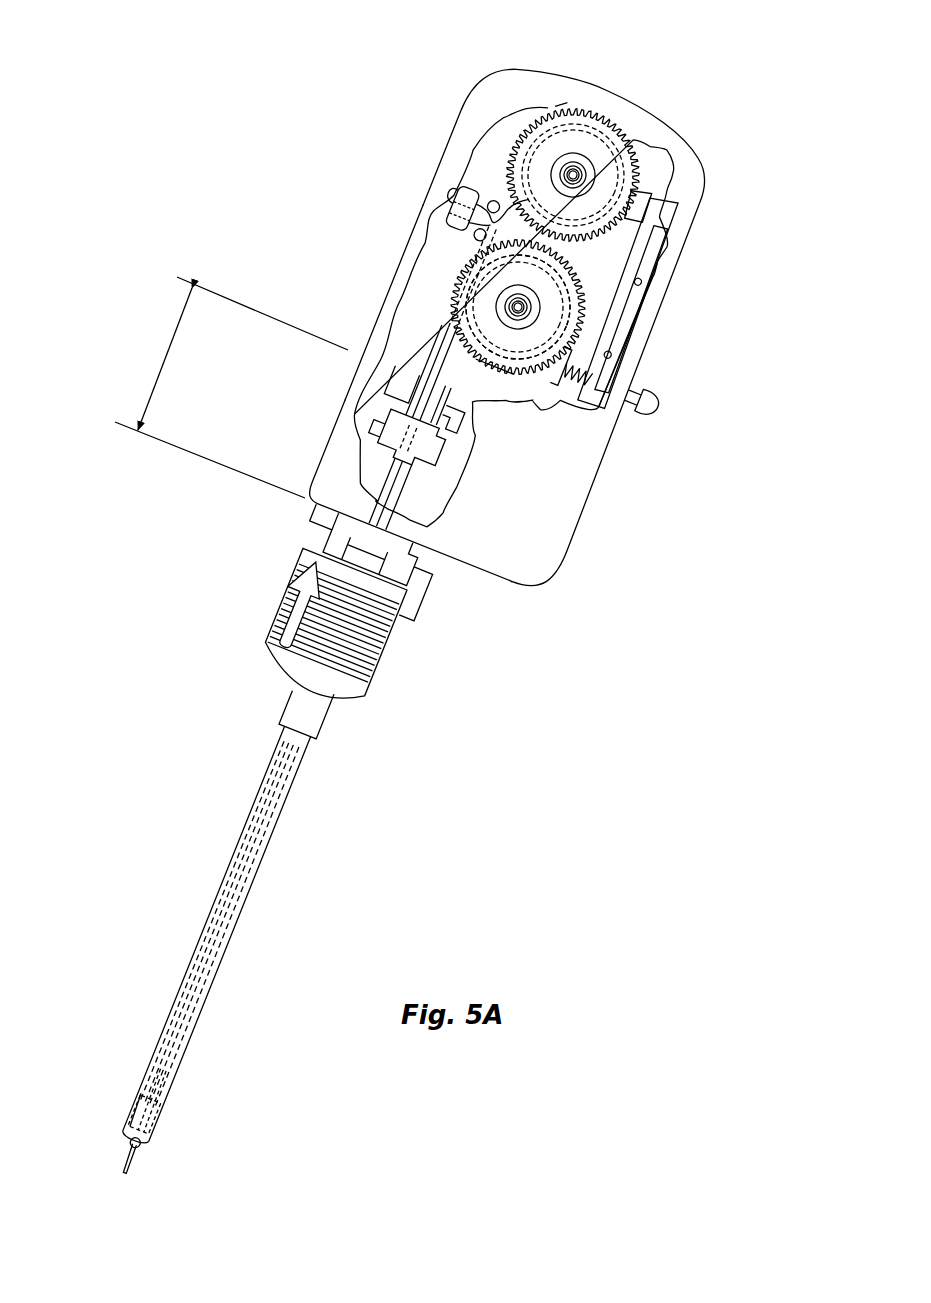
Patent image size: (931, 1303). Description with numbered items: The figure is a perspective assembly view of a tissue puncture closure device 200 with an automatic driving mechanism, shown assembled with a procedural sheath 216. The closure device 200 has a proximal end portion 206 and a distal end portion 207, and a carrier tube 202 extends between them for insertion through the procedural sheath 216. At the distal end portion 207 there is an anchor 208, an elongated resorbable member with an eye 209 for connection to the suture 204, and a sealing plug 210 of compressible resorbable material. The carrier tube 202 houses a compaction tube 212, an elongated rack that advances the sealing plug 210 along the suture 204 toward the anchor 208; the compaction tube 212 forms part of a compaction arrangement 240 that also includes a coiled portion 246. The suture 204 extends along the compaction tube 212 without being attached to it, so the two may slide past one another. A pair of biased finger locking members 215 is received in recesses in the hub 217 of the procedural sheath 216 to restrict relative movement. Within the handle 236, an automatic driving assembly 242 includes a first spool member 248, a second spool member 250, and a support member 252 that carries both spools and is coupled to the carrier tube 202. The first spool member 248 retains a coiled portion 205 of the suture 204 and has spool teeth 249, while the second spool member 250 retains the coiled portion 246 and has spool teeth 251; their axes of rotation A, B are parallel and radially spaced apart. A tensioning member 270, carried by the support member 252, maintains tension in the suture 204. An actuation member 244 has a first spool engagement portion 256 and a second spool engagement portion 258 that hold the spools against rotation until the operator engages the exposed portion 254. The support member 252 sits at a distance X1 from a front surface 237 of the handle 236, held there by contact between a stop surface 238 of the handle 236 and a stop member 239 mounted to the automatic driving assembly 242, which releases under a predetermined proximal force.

The tissue puncture closure device 200 is at (390, 226).
The carrier tube 202 is at (170, 1087).
The suture 204 is at (187, 983).
The coiled portion of the suture 205 is at (622, 178).
The proximal end portion 206 is at (317, 432).
The distal end portion 207 is at (140, 1052).
The anchor 208 is at (132, 1167).
The eye 209 is at (127, 1142).
The sealing plug 210 is at (147, 1100).
The compaction tube 212 is at (450, 350).
The biased finger locking members 215 is at (320, 550).
The procedural sheath 216 is at (270, 758).
The hub 217 is at (285, 608).
The handle 236 is at (572, 538).
The front surface 237 is at (513, 582).
The stop surface 238 is at (470, 428).
The stop member 239 is at (480, 412).
The compaction arrangement 240 is at (432, 355).
The automatic driving assembly 242 is at (654, 157).
The actuation member 244 is at (632, 328).
The coiled portion of the compaction arrangement 246 is at (572, 338).
The first spool member 248 is at (546, 111).
The spool teeth 249 is at (557, 101).
The second spool member 250 is at (518, 378).
The spool teeth 251 is at (460, 281).
The support member 252 is at (402, 370).
The exposed portion 254 is at (652, 403).
The first spool engagement portion 256 is at (637, 204).
The second spool engagement portion 258 is at (583, 338).
The tensioning member 270 is at (457, 187).
The axis of rotation of the first spool member A is at (578, 168).
The axis of rotation of the second spool member B is at (508, 307).
The distance X1 is at (231, 387).